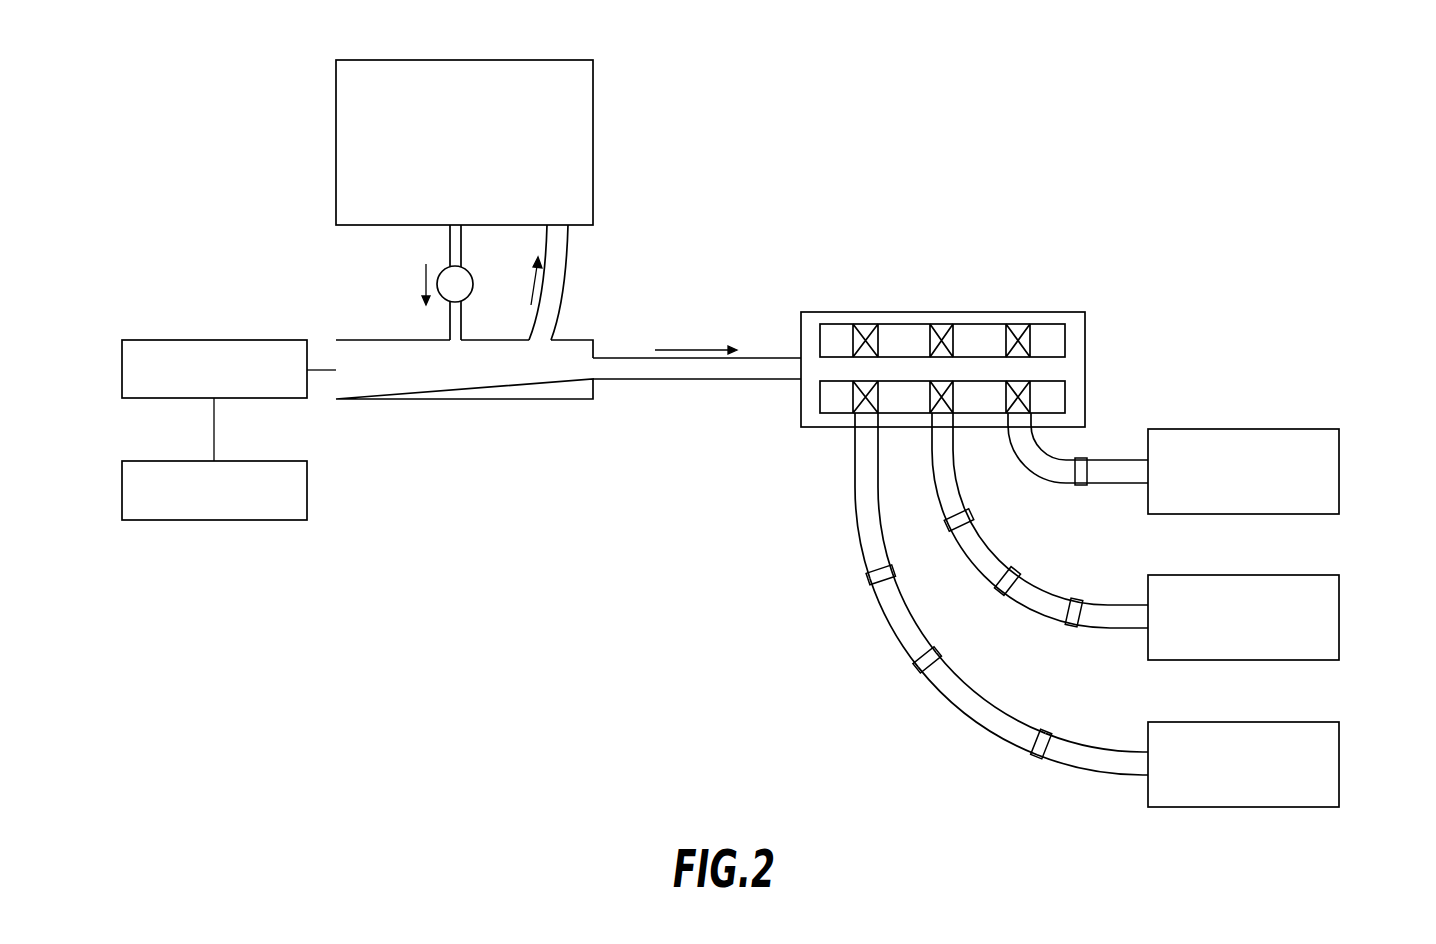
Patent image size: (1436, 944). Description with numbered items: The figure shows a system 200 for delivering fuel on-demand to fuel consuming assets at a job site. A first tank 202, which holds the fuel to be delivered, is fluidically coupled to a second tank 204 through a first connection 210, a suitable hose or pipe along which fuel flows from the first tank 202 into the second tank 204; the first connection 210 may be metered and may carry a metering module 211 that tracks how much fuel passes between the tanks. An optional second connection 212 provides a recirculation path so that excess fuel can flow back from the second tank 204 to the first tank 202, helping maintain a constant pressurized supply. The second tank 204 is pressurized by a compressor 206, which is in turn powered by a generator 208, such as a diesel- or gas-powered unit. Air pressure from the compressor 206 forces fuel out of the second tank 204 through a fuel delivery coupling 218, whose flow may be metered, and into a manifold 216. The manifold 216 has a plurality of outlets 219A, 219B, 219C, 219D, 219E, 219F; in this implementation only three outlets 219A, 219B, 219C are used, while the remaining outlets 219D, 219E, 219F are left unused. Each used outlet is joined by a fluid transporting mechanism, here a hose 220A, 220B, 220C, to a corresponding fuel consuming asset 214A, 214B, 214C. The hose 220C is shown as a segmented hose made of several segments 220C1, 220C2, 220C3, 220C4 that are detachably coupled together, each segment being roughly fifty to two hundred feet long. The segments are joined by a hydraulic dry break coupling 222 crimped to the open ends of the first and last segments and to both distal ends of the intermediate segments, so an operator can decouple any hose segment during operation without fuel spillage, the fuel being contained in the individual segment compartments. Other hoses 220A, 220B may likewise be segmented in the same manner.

The system 200 is at (1060, 105).
The first tank 202 is at (596, 93).
The second tank 204 is at (510, 400).
The compressor 206 is at (143, 338).
The generator 208 is at (138, 522).
The first connection 210 is at (417, 282).
The metering module 211 is at (443, 298).
The second connection 212 is at (565, 288).
The fuel consuming asset 214A is at (1307, 429).
The fuel consuming asset 214B is at (1342, 605).
The fuel consuming asset 214C is at (1342, 752).
The manifold 216 is at (908, 312).
The fuel delivery coupling 218 is at (728, 382).
The outlet 219A is at (1030, 397).
The outlet 219B is at (953, 400).
The outlet 219C is at (853, 397).
The outlet 219D is at (1020, 324).
The outlet 219E is at (945, 324).
The outlet 219F is at (862, 324).
The hose 220A is at (1102, 460).
The hose 220B is at (1050, 617).
The hose 220C is at (946, 633).
The hose segment 220C1 is at (855, 530).
The hose segment 220C2 is at (878, 610).
The hose segment 220C3 is at (955, 710).
The hose segment 220C4 is at (1095, 775).
The hydraulic dry break coupling 222 is at (1080, 487).